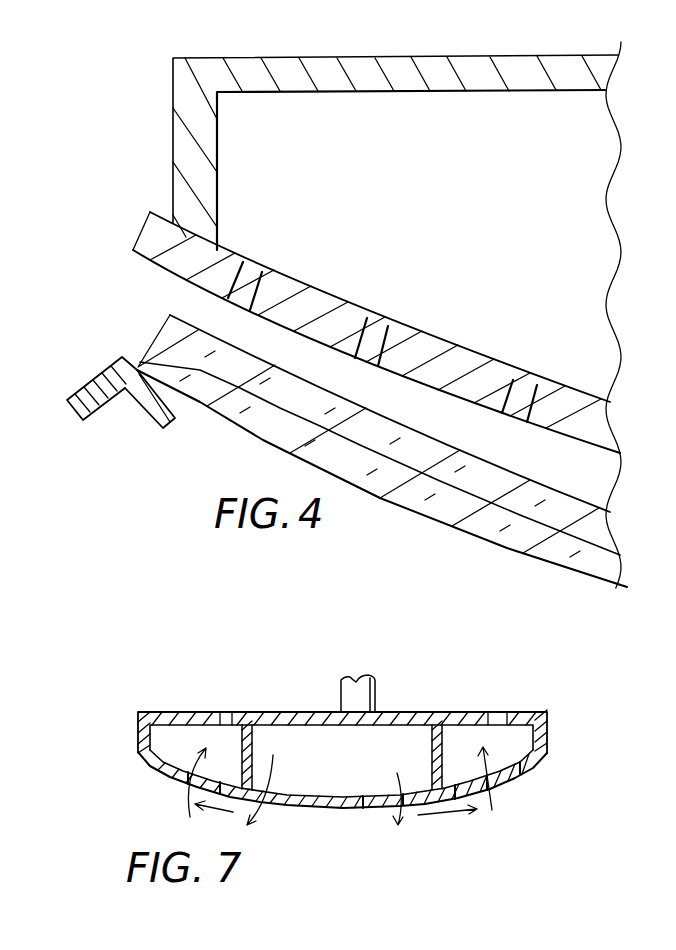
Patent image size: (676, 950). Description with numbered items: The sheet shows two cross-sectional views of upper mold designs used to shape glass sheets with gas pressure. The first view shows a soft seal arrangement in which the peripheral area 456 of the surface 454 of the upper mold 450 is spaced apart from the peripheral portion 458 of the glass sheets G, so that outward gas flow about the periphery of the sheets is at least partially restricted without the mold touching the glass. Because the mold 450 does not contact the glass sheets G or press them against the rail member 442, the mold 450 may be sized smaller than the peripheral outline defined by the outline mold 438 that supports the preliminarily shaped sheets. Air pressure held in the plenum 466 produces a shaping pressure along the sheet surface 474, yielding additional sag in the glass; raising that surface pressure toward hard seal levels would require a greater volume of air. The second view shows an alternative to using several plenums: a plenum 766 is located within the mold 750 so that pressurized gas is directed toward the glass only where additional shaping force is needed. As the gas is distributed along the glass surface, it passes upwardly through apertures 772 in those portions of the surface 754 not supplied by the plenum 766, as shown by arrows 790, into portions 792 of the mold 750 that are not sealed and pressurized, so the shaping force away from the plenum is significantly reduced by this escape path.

In FIG. 4, the upper mold 450 is at (477, 55).
In FIG. 4, the plenum 466 is at (597, 199).
In FIG. 4, the peripheral area 456 is at (153, 261).
In FIG. 4, the surface 454 is at (470, 405).
In FIG. 4, the peripheral portion 458 is at (202, 333).
In FIG. 4, the sheet surface 474 is at (407, 403).
In FIG. 4, the glass sheets G is at (460, 531).
In FIG. 4, the rail member 442 is at (82, 387).
In FIG. 4, the outline mold 438 is at (146, 413).
In FIG. 7, the mold 750 is at (522, 710).
In FIG. 7, the surface 754 is at (510, 785).
In FIG. 7, the plenum 766 is at (350, 763).
In FIG. 7, the apertures 772 is at (313, 804).
In FIG. 7, the arrows 790 is at (183, 798).
In FIG. 7, the portions 792 is at (200, 753).